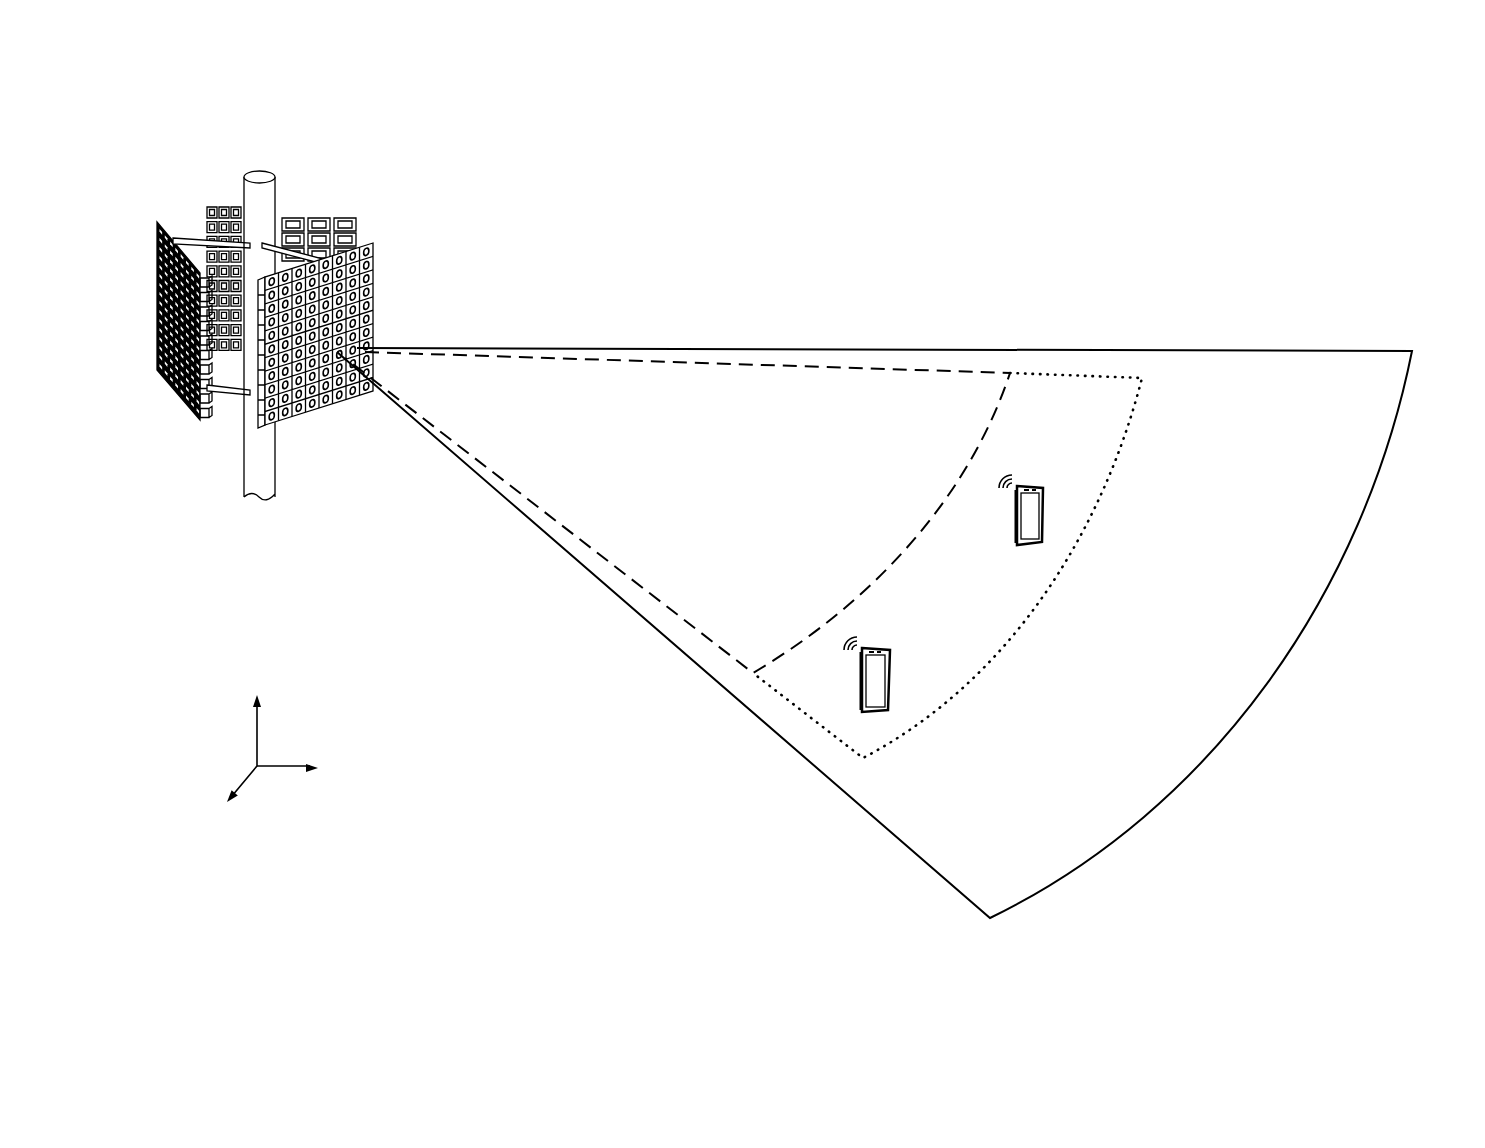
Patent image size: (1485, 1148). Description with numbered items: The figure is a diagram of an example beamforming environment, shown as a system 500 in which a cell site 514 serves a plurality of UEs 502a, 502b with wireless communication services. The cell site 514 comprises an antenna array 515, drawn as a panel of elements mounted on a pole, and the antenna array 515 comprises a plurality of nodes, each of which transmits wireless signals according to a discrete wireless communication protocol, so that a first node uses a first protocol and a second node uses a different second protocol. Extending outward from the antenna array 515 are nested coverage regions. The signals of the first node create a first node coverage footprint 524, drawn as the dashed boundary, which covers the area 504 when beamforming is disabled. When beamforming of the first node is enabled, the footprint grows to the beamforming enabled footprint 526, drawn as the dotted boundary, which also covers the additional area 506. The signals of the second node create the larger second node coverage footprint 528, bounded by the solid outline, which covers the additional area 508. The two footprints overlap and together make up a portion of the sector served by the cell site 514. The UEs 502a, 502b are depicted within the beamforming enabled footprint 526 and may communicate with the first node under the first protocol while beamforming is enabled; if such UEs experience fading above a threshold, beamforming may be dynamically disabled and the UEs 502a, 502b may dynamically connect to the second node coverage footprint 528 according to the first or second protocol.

The system 500 is at (644, 118).
The UE 502a is at (1015, 525).
The UE 502b is at (913, 658).
The area 504 is at (728, 459).
The additional area 506 is at (1078, 432).
The additional area 508 is at (1237, 612).
The cell site 514 is at (296, 156).
The antenna array 515 is at (346, 412).
The first node coverage footprint 524 is at (829, 368).
The beamforming enabled footprint 526 is at (1052, 373).
The second node coverage footprint 528 is at (1252, 352).